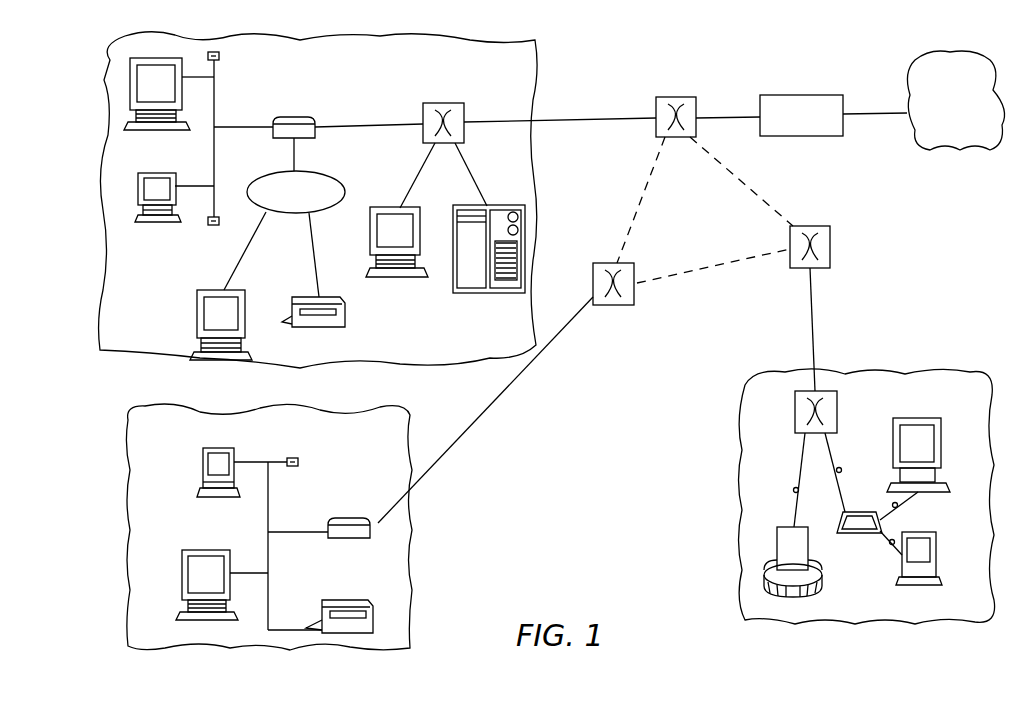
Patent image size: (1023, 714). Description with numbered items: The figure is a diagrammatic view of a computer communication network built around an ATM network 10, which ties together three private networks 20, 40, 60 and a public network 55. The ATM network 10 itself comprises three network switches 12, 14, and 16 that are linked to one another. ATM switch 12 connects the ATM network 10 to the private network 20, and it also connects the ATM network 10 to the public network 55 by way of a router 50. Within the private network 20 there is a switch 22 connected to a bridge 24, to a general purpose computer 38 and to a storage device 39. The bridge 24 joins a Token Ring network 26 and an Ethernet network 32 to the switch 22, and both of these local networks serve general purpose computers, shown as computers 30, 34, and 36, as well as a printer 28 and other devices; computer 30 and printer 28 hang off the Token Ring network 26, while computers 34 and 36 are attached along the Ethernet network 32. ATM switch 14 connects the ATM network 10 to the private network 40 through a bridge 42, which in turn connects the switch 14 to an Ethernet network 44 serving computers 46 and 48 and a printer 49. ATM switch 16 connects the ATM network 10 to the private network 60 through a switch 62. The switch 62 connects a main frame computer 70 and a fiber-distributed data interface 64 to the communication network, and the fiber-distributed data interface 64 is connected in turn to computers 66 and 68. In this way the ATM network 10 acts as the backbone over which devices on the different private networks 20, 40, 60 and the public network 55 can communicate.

The ATM network 10 is at (706, 220).
The ATM switch 12 is at (676, 97).
The ATM switch 14 is at (634, 302).
The ATM switch 16 is at (828, 225).
The private network 20 is at (540, 54).
The switch 22 is at (460, 103).
The bridge 24 is at (295, 117).
The Token Ring network 26 is at (318, 174).
The printer 28 is at (346, 331).
The general purpose computer 30 is at (197, 325).
The Ethernet network 32 is at (216, 92).
The general purpose computer 34 is at (172, 131).
The general purpose computer 36 is at (165, 226).
The general purpose computer 38 is at (387, 208).
The storage device 39 is at (501, 205).
The private network 40 is at (412, 575).
The bridge 42 is at (348, 518).
The Ethernet network 44 is at (271, 491).
The computer 46 is at (203, 455).
The computer 48 is at (182, 557).
The printer 49 is at (341, 600).
The router 50 is at (802, 95).
The public network 55 is at (946, 52).
The private network 60 is at (897, 367).
The switch 62 is at (838, 413).
The fiber-distributed data interface 64 is at (858, 534).
The computer 66 is at (925, 418).
The computer 68 is at (936, 535).
The main frame computer 70 is at (793, 592).